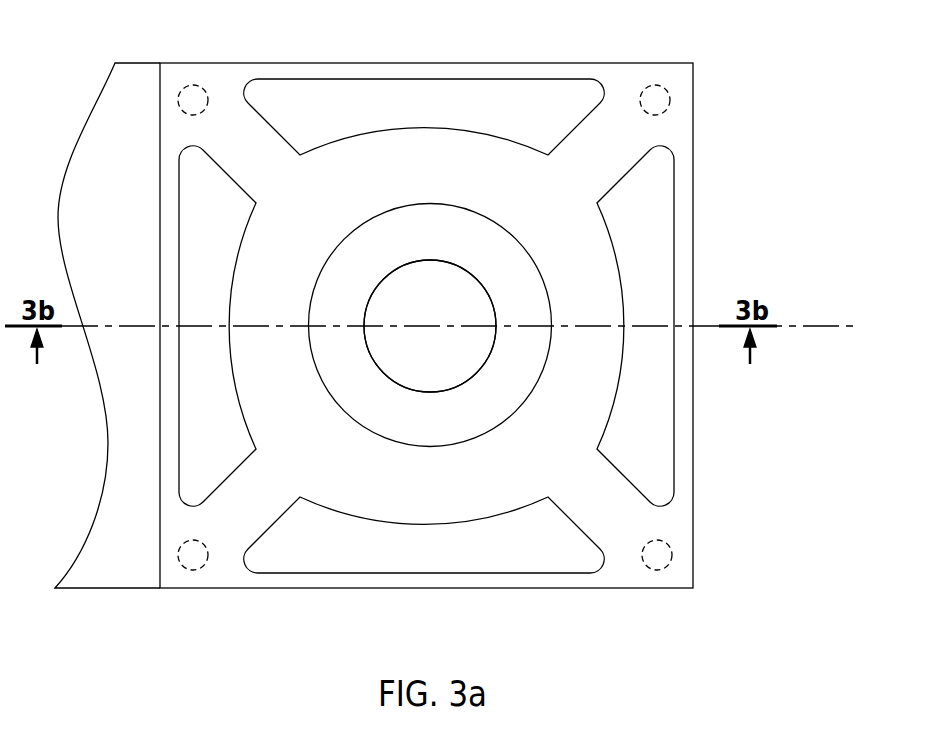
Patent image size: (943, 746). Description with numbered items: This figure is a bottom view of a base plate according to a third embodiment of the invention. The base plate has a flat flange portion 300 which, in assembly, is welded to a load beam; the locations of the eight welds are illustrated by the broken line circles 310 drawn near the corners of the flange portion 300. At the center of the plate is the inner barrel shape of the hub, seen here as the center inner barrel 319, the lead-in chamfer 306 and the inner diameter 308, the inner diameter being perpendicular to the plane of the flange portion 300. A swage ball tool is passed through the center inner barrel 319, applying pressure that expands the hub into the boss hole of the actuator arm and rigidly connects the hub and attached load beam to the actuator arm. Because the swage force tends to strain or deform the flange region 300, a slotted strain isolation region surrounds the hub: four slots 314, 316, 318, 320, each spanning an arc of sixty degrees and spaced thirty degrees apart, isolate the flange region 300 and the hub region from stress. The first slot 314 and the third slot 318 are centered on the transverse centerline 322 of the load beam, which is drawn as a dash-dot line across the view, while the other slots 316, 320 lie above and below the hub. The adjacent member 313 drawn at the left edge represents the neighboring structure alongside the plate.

The flat flange portion 300 is at (596, 68).
The lead-in chamfer 306 is at (528, 378).
The inner diameter 308 is at (396, 380).
The broken line circles 310 is at (673, 552).
The adjacent member 313 is at (137, 180).
The first slot 314 is at (179, 263).
The slot 316 is at (450, 69).
The third slot 318 is at (676, 251).
The center inner barrel 319 is at (453, 312).
The slot 320 is at (372, 574).
The transverse centerline 322 is at (818, 328).